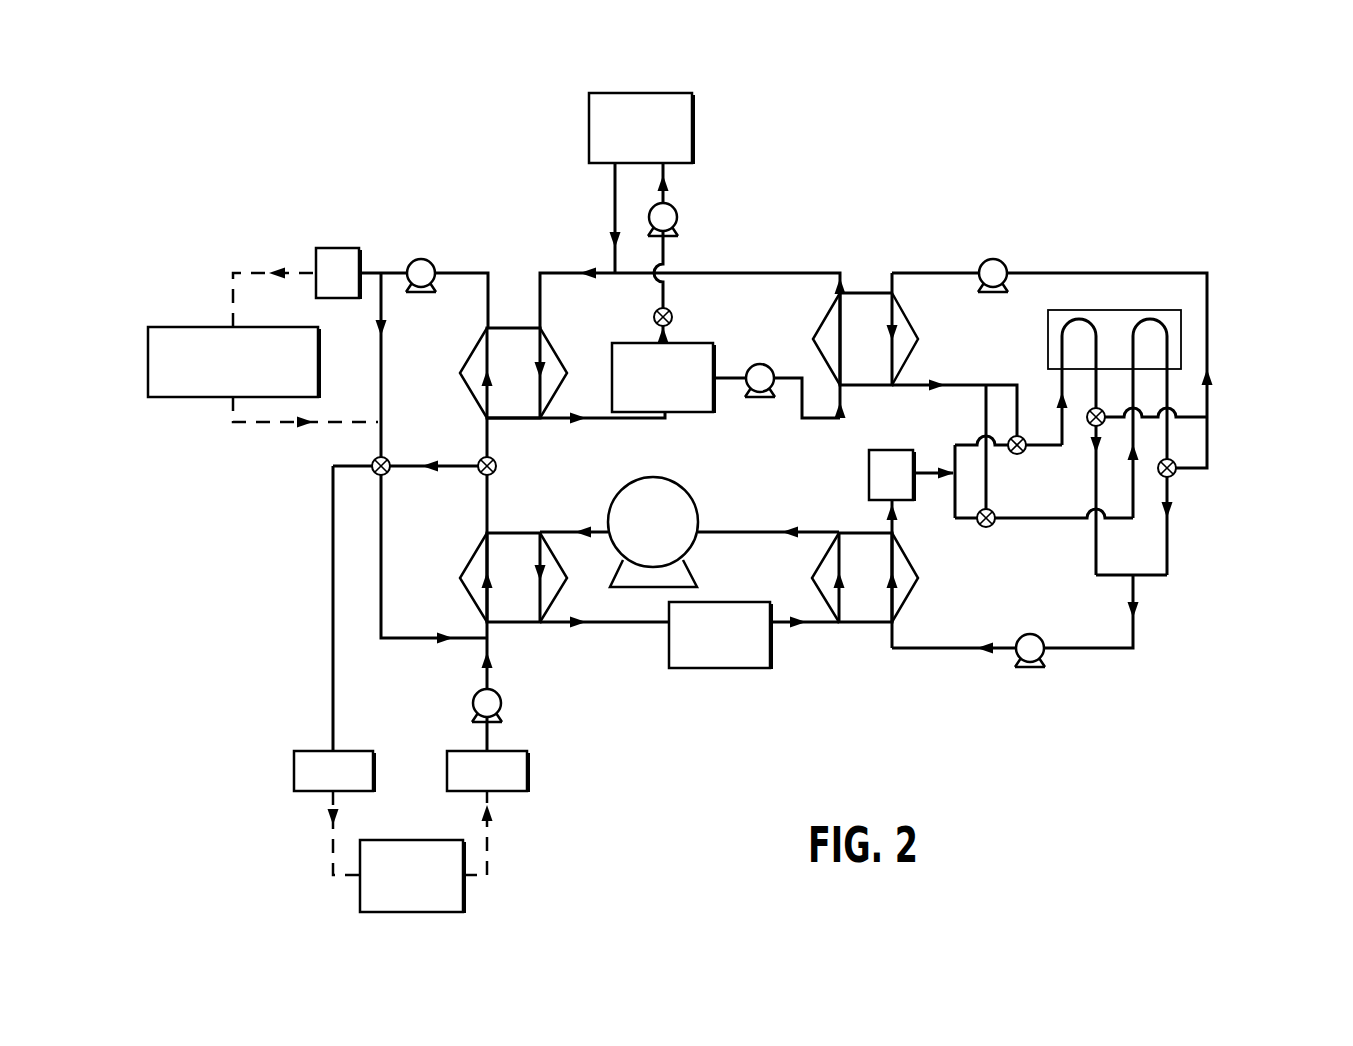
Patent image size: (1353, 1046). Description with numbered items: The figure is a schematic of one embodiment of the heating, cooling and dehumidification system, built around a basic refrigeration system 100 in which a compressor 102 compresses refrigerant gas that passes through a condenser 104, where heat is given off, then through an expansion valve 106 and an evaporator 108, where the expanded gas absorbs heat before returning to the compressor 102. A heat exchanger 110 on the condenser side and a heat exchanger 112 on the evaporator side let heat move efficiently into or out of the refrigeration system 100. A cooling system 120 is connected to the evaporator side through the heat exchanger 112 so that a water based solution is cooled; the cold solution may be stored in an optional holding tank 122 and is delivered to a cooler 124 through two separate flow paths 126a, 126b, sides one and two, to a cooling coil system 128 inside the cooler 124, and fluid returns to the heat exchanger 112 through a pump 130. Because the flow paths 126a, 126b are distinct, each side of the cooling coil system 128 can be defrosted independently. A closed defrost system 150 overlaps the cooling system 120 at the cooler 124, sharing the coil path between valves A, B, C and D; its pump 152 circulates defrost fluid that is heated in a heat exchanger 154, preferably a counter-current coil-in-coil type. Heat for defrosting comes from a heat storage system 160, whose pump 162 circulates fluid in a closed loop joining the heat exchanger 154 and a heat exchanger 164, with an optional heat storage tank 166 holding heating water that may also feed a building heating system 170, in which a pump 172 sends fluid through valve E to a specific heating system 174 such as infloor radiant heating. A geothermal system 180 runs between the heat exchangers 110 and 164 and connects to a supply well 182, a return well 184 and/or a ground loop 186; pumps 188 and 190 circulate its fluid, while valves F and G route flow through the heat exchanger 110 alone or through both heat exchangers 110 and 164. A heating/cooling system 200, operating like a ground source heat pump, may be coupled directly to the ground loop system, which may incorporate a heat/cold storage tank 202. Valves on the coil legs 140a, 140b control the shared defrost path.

The refrigeration system 100 is at (637, 712).
The compressor 102 is at (620, 492).
The condenser 104 is at (535, 555).
The expansion valve 106 is at (725, 668).
The evaporator 108 is at (852, 607).
The heat exchanger 110 is at (477, 550).
The heat exchanger 112 is at (868, 588).
The cooling system 120 is at (1226, 491).
The holding tank 122 is at (869, 473).
The cooler 124 is at (1113, 310).
The flow path 126a is at (1027, 450).
The flow path 126b is at (1028, 522).
The cooling coil system 128 is at (1063, 322).
The pump 130 is at (1030, 670).
The valve D 140a is at (1197, 470).
The valve B line 140b is at (1193, 412).
The defrost system 150 is at (1059, 224).
The pump 152 is at (993, 259).
The heat exchanger 154 is at (860, 307).
The heat storage system 160 is at (795, 243).
The pump 162 is at (759, 364).
The heat exchanger 164 is at (510, 328).
The heat storage tank 166 is at (697, 412).
The building heating system 170 is at (706, 127).
The pump 172 is at (677, 217).
The specific heating system 174 is at (589, 126).
The geothermal system 180 is at (270, 572).
The supply well 182 is at (527, 770).
The return well 184 is at (294, 770).
The ground loop 186 is at (417, 912).
The pump 188 is at (421, 259).
The pump 190 is at (501, 703).
The heating/cooling system 200 is at (190, 327).
The heat/cold storage tank 202 is at (330, 248).